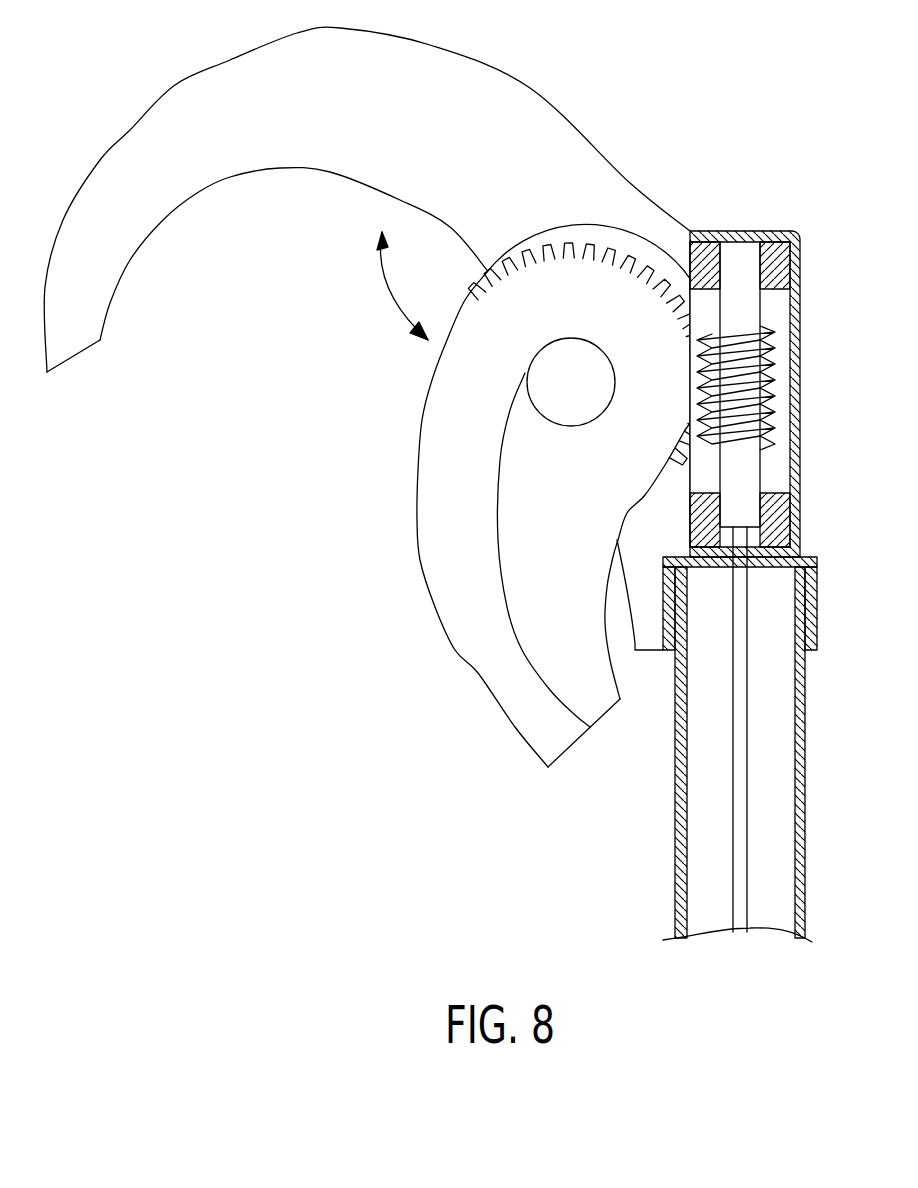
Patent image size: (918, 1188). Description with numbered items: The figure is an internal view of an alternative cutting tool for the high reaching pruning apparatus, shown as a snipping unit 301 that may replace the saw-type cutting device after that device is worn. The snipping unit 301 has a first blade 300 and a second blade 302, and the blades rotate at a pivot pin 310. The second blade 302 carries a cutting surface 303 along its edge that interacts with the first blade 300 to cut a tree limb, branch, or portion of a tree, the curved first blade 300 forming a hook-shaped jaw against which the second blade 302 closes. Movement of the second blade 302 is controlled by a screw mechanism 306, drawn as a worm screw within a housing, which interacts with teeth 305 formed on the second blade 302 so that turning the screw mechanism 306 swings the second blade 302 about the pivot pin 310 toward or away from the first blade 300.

The first blade 300 is at (178, 215).
The snipping unit 301 is at (459, 142).
The second blade 302 is at (521, 495).
The cutting surface 303 is at (437, 515).
The teeth 305 is at (613, 250).
The screw mechanism 306 is at (767, 407).
The pivot pin 310 is at (473, 302).